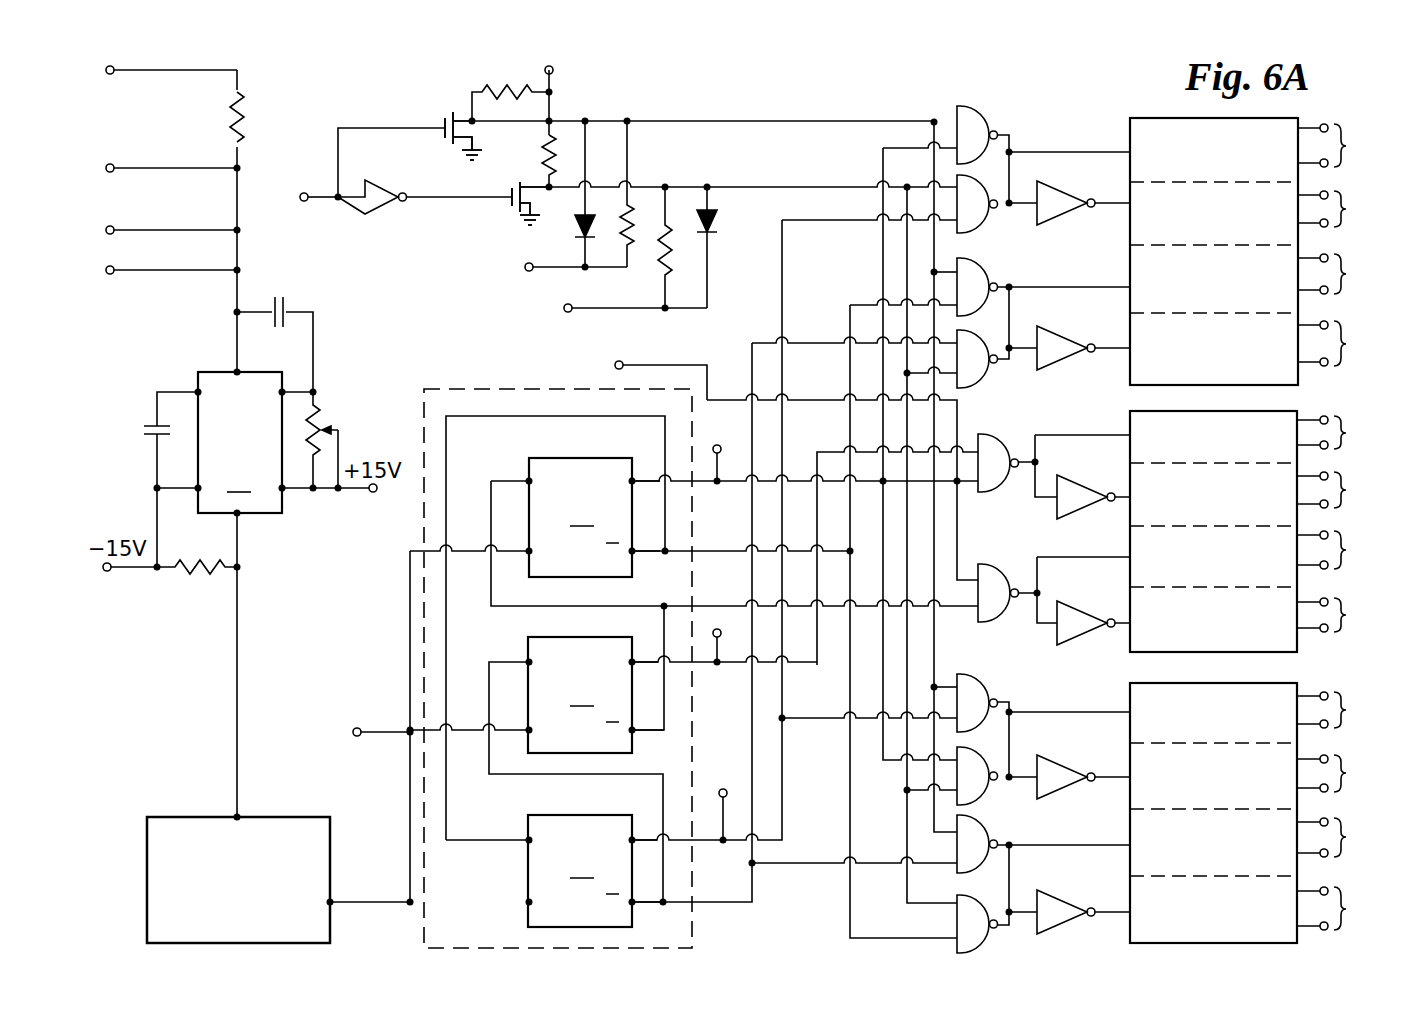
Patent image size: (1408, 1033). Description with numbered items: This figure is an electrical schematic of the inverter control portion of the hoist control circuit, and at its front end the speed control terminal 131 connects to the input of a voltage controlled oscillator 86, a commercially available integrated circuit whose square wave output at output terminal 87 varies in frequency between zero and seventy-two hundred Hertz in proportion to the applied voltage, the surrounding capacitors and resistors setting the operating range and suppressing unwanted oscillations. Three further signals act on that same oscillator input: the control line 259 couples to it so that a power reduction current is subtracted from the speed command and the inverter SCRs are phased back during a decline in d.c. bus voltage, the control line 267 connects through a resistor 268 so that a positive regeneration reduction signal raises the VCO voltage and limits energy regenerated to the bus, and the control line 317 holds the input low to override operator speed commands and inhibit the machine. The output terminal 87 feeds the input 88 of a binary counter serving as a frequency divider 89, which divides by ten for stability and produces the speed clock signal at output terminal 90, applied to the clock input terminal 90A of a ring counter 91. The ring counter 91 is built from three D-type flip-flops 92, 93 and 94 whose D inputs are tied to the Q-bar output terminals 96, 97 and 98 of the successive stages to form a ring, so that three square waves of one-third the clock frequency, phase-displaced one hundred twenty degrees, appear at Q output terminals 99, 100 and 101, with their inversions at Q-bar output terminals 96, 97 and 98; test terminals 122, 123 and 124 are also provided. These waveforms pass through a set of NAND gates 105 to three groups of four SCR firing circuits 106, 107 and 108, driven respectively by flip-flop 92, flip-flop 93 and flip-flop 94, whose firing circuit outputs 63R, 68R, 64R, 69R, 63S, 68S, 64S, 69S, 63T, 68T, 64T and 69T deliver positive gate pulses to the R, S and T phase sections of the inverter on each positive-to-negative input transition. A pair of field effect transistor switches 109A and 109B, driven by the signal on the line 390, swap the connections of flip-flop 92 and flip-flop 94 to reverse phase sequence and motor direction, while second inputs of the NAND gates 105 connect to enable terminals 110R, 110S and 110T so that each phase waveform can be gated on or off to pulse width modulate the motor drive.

The control line 267 is at (110, 75).
The resistor 268 is at (243, 119).
The control line 259 is at (127, 150).
The control line 317 is at (110, 226).
The speed control terminal 131 is at (110, 274).
The line 390 is at (304, 193).
The field effect transistor switch 109A is at (443, 126).
The field effect transistor switch 109B is at (510, 193).
The enable terminal 110R is at (552, 265).
The enable terminal 110S is at (639, 376).
The enable terminal 110T is at (612, 306).
The NAND gates 105 is at (947, 102).
The SCR firing circuits 106 is at (1139, 115).
The SCR firing circuits 107 is at (1268, 410).
The SCR firing circuits 108 is at (1268, 682).
The firing circuit output 63R is at (1344, 145).
The firing circuit output 68R is at (1344, 209).
The firing circuit output 64R is at (1344, 274).
The firing circuit output 69R is at (1344, 343).
The firing circuit output 63S is at (1343, 432).
The firing circuit output 68S is at (1343, 490).
The firing circuit output 64S is at (1343, 550).
The firing circuit output 69S is at (1343, 615).
The firing circuit output 63T is at (1343, 710).
The firing circuit output 68T is at (1343, 773).
The firing circuit output 64T is at (1343, 837).
The firing circuit output 69T is at (1343, 908).
The ring counter 91 is at (500, 389).
The D-type flip-flop 92 is at (580, 517).
The D-type flip-flop 93 is at (580, 695).
The D-type flip-flop 94 is at (580, 871).
The Q output terminal 99 is at (636, 479).
The Q output terminal 100 is at (634, 660).
The Q output terminal 101 is at (634, 838).
The Q-bar output terminal 96 is at (635, 553).
The Q-bar output terminal 97 is at (635, 732).
The Q-bar output terminal 98 is at (635, 904).
The test terminal 122 is at (717, 445).
The test terminal 123 is at (736, 616).
The test terminal 124 is at (723, 789).
The voltage controlled oscillator 86 is at (240, 442).
The output terminal 87 is at (241, 516).
The input 88 is at (237, 700).
The frequency divider 89 is at (333, 843).
The output terminal 90 is at (335, 905).
The clock input terminal 90A is at (367, 718).